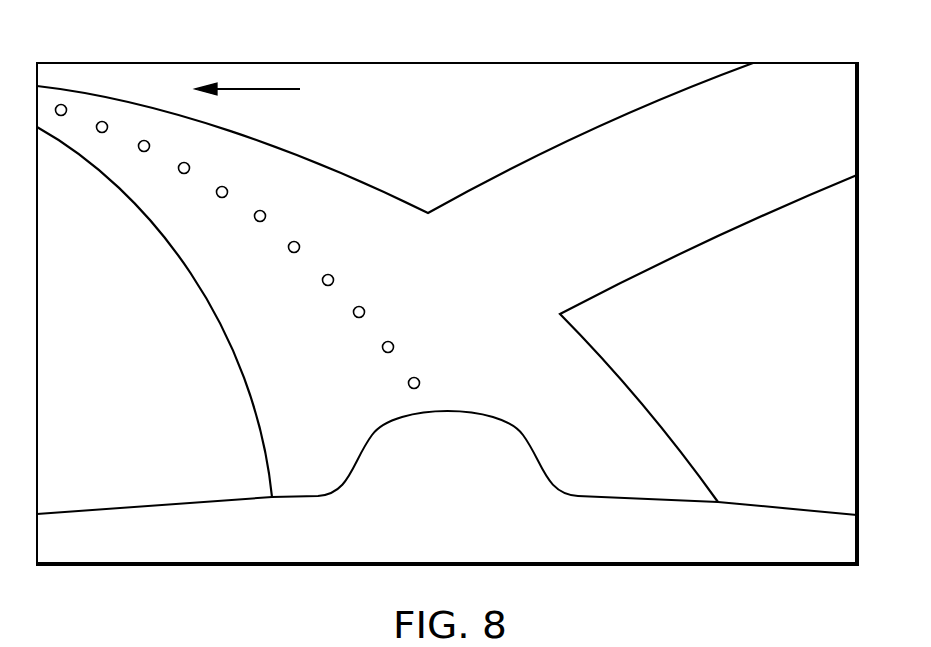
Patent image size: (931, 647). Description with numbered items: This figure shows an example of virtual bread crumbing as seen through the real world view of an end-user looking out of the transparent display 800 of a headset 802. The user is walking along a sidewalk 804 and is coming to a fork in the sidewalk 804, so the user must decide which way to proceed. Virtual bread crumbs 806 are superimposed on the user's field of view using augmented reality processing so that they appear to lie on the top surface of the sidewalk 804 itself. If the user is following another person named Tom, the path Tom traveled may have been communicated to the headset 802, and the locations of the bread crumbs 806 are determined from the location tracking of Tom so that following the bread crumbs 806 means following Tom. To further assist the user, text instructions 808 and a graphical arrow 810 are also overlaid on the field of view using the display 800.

The transparent display 800 is at (831, 490).
The headset 802 is at (831, 555).
The sidewalk 804 is at (584, 372).
The virtual bread crumbs 806 is at (191, 167).
The text instructions 808 is at (452, 78).
The graphical arrow 810 is at (260, 88).